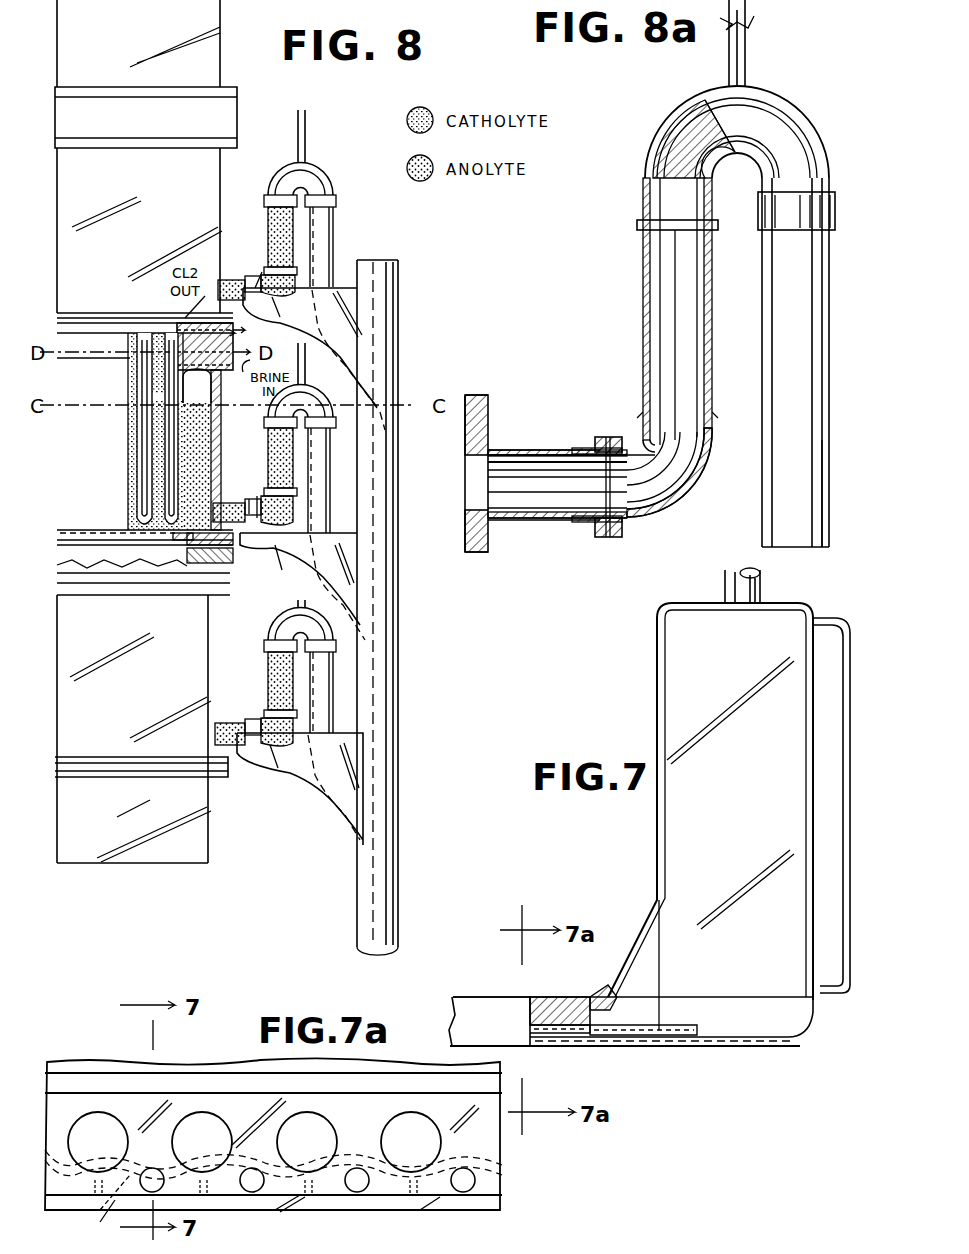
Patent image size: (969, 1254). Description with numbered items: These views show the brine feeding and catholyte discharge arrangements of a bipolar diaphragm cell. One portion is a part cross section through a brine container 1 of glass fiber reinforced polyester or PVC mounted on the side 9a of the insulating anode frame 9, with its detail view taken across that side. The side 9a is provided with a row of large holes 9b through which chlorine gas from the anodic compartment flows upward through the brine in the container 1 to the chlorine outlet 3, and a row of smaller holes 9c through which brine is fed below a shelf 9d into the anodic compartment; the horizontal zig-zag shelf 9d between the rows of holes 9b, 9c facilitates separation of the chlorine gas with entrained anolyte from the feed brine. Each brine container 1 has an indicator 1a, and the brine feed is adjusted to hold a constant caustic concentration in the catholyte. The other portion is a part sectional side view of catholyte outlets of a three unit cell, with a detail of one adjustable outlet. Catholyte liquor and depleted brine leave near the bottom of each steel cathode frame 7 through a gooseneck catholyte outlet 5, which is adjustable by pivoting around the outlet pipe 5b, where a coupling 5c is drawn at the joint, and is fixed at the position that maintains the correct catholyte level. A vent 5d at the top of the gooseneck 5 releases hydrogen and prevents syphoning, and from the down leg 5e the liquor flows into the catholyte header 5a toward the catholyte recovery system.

In FIG. 7, the brine container 1 is at (752, 790).
In FIG. 7, the indicator 1a is at (845, 700).
In FIG. 7, the chlorine outlet 3 is at (732, 595).
In FIG. 8, the gooseneck catholyte outlet 5 is at (337, 261).
In FIG. 8A, the gooseneck catholyte outlet 5 is at (846, 316).
In FIG. 8, the catholyte header 5a is at (399, 545).
In FIG. 8, the outlet pipe 5b is at (232, 282).
In FIG. 8A, the outlet pipe 5b is at (545, 455).
In FIG. 8, the coupling nut 5c is at (260, 500).
In FIG. 8A, the coupling nut 5c is at (606, 436).
In FIG. 8, the vent 5d is at (306, 130).
In FIG. 8A, the vent 5d is at (747, 55).
In FIG. 8, the down leg 5e is at (306, 532).
In FIG. 8A, the down leg 5e is at (822, 522).
In FIG. 8, the cathode frame 7 is at (216, 400).
In FIG. 8, the insulating anode frame 9 is at (232, 563).
In FIG. 7, the side of anode frame 9a is at (570, 995).
In FIG. 7, the large holes 9b is at (527, 1010).
In FIG. 7A, the large holes 9b is at (84, 1138).
In FIG. 7, the smaller holes 9c is at (570, 1022).
In FIG. 7A, the smaller holes 9c is at (153, 1178).
In FIG. 7, the shelf 9d is at (677, 1018).
In FIG. 7A, the shelf 9d is at (112, 1208).